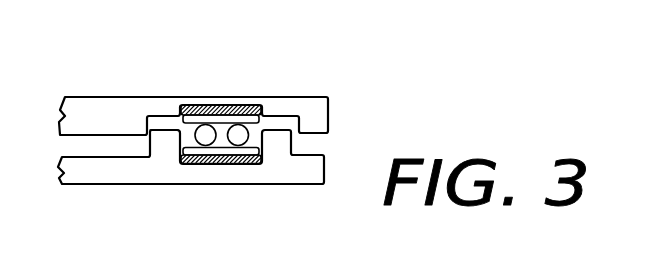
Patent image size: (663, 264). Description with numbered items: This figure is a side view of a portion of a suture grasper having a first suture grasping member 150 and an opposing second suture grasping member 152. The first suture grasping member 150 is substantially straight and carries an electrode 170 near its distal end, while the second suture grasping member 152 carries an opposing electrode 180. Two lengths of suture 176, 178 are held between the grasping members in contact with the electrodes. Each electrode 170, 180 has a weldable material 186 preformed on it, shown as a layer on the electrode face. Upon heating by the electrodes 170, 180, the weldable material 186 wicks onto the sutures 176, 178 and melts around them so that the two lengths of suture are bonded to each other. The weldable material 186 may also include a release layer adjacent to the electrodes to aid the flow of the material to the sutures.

The first suture grasping member 150 is at (92, 185).
The second suture grasping member 152 is at (103, 97).
The electrode 170 is at (220, 165).
The electrode 180 is at (228, 105).
The length of suture 176 is at (253, 136).
The length of suture 178 is at (174, 146).
The weldable material 186 is at (260, 121).